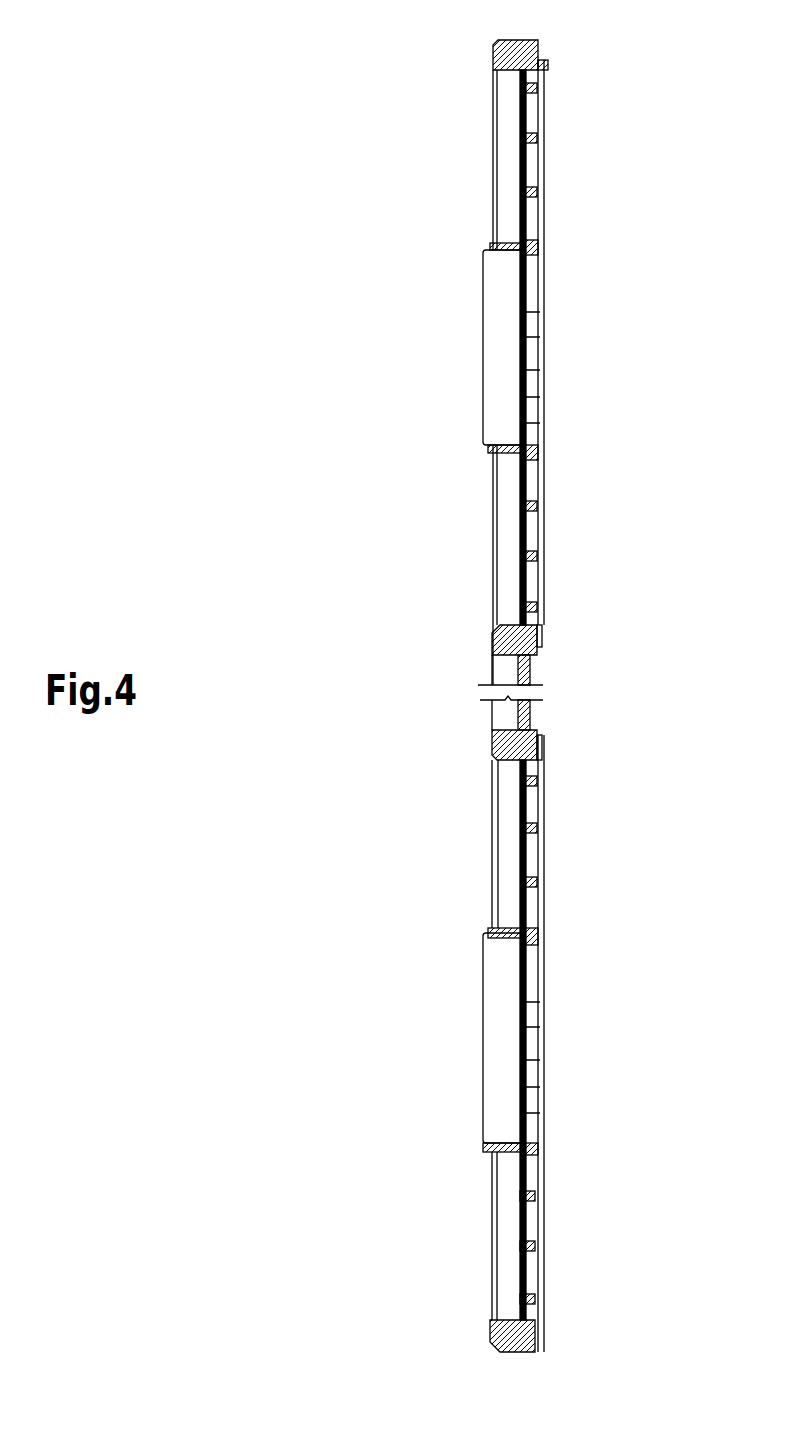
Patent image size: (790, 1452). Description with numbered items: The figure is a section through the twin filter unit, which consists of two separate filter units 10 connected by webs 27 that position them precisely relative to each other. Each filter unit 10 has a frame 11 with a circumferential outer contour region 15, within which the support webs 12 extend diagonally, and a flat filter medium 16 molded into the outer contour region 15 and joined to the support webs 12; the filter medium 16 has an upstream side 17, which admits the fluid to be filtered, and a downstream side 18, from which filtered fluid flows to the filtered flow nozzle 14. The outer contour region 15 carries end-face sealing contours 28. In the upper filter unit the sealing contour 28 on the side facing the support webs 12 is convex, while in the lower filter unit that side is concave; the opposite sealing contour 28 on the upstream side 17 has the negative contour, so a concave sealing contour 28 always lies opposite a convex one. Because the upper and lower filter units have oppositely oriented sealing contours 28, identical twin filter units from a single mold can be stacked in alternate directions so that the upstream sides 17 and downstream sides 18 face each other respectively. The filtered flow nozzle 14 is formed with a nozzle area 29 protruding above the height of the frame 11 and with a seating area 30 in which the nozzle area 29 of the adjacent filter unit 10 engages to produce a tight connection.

The filter unit 10 is at (541, 690).
The frame 11 is at (508, 67).
The support webs 12 is at (538, 89).
The filtered flow nozzle 14 is at (493, 247).
The outer contour region 15 is at (496, 36).
The filter medium 16 is at (520, 117).
The upstream side 17 is at (515, 182).
The downstream side 18 is at (531, 165).
The webs 27 is at (533, 722).
The sealing contours 28 is at (487, 58).
The nozzle area 29 is at (483, 457).
The seating area 30 is at (544, 256).